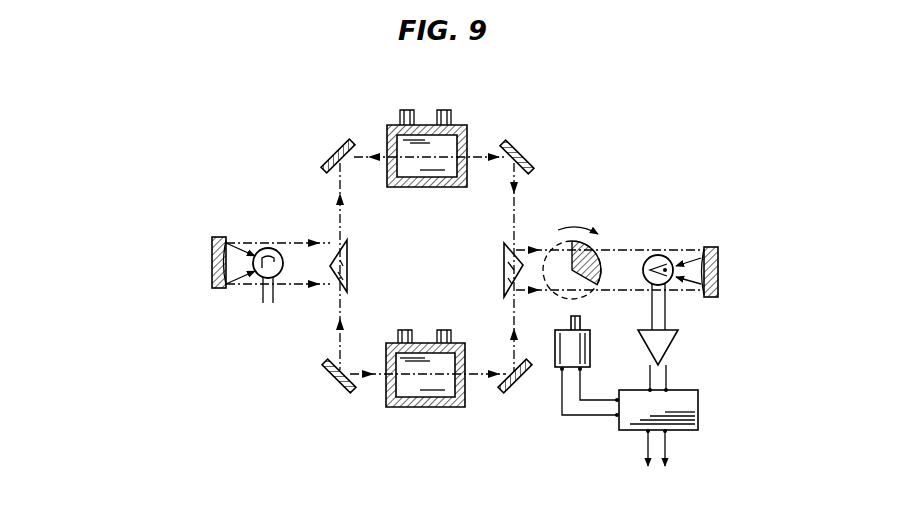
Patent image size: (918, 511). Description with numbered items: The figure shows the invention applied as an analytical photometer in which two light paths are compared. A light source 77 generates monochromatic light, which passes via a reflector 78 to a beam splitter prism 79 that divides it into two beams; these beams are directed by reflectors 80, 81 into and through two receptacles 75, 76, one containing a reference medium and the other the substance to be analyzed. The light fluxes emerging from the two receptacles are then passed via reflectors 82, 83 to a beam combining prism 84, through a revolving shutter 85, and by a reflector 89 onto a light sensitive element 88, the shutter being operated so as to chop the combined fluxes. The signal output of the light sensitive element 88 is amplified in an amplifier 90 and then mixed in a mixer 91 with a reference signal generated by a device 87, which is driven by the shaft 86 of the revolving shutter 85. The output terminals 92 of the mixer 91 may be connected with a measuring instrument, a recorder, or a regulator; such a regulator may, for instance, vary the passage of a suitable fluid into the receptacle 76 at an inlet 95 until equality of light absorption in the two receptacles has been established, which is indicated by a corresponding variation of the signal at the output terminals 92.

The receptacle 75 is at (406, 400).
The receptacle 76 is at (438, 132).
The light source 77 is at (269, 248).
The reflector 78 is at (212, 263).
The beam splitter prism 79 is at (345, 264).
The reflector 80 is at (346, 146).
The reflector 81 is at (324, 364).
The reflector 82 is at (524, 150).
The reflector 83 is at (510, 388).
The beam combining prism 84 is at (504, 266).
The revolving shutter 85 is at (599, 268).
The shaft 86 is at (570, 320).
The device 87 is at (590, 347).
The light sensitive element 88 is at (661, 256).
The reflector 89 is at (718, 270).
The amplifier 90 is at (676, 347).
The mixer 91 is at (698, 406).
The output terminals 92 is at (668, 457).
The fluid passage 95 is at (404, 110).